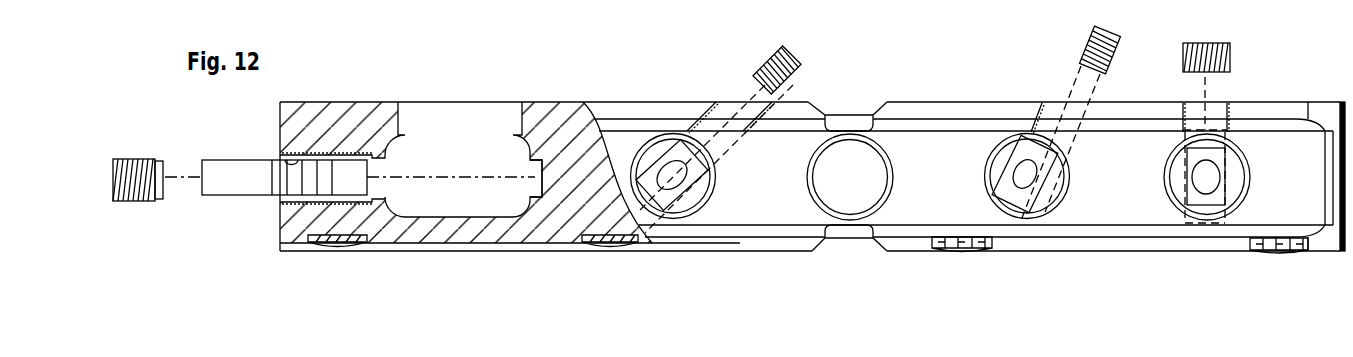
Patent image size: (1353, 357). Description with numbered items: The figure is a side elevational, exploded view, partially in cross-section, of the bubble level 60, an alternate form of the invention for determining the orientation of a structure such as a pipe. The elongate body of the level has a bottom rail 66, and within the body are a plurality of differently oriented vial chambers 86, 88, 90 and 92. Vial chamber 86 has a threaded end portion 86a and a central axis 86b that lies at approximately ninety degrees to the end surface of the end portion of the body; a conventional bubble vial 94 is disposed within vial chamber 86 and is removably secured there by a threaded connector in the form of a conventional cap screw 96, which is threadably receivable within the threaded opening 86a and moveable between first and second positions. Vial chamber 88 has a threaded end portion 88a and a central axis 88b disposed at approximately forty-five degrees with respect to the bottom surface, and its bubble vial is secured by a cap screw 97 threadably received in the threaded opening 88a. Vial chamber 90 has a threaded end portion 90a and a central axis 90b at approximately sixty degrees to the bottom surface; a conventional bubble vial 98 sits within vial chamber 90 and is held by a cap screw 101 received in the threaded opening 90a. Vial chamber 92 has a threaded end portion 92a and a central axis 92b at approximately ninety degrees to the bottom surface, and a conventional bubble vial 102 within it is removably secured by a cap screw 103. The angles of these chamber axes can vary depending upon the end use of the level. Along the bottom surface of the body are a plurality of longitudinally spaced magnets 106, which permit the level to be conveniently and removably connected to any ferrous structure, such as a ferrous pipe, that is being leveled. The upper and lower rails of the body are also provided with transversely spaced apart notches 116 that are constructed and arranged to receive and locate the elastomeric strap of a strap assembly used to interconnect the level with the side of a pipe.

The bubble level 60 is at (947, 83).
The bottom rail 66 is at (500, 252).
The vial chamber 86 is at (440, 145).
The threaded end portion 86a is at (292, 160).
The central axis 86b is at (495, 178).
The vial chamber 88 is at (688, 197).
The threaded end portion 88a is at (740, 135).
The central axis 88b is at (742, 102).
The vial chamber 90 is at (1055, 188).
The threaded end portion 90a is at (1077, 137).
The central axis 90b is at (1085, 82).
The vial chamber 92 is at (1235, 173).
The threaded end portion 92a is at (1230, 110).
The central axis 92b is at (1203, 80).
The bubble vial 94 is at (223, 197).
The cap screw 96 is at (133, 158).
The cap screw 97 is at (765, 55).
The bubble vial 98 is at (1015, 155).
The cap screw 101 is at (1113, 38).
The bubble vial 102 is at (1217, 195).
The cap screw 103 is at (1231, 49).
The magnets 106 is at (352, 247).
The notches 116 is at (835, 112).